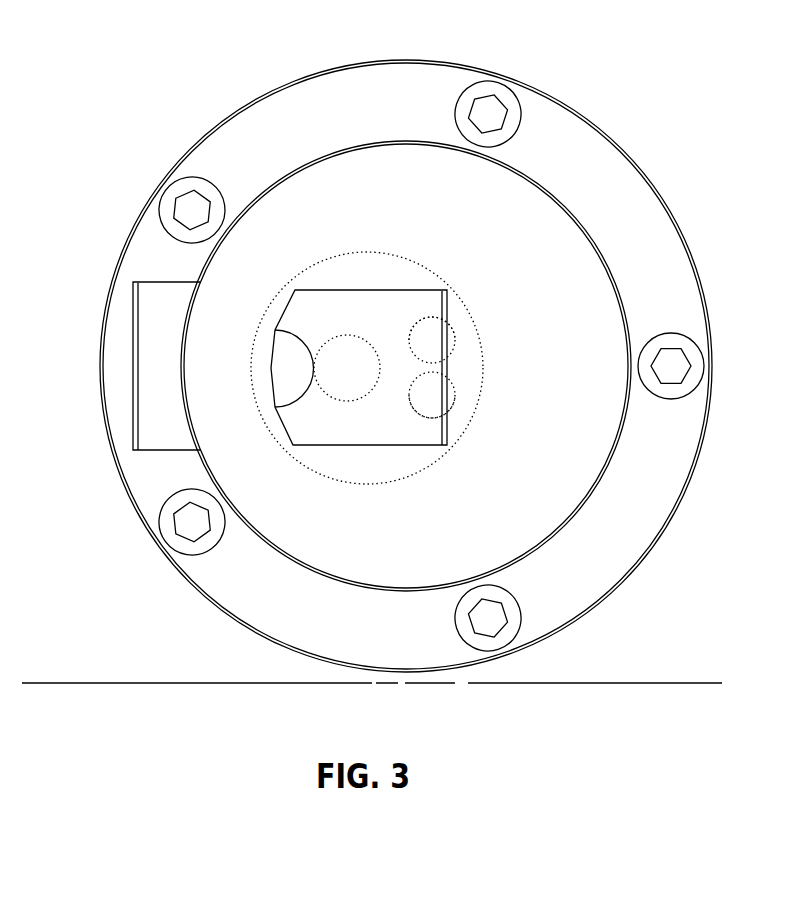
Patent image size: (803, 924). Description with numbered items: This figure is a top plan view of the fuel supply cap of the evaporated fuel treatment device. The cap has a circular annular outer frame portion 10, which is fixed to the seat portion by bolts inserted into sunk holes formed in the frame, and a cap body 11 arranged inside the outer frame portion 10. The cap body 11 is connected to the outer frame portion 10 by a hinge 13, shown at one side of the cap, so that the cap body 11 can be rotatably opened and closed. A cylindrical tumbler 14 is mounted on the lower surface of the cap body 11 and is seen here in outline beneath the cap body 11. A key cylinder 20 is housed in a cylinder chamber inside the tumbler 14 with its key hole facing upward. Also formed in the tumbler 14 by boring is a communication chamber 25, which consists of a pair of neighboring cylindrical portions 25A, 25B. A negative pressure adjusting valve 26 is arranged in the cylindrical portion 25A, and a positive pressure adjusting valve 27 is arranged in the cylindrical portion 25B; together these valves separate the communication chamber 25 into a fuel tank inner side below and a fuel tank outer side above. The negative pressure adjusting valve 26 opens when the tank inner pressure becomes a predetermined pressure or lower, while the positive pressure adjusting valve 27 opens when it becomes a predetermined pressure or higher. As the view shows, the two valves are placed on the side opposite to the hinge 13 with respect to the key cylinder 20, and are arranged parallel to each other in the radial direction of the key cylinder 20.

The outer frame portion 10 is at (277, 111).
The cap body 11 is at (533, 268).
The hinge 13 is at (158, 382).
The tumbler 14 is at (377, 252).
The key cylinder 20 is at (347, 335).
The communication chamber 25 is at (512, 367).
The cylindrical portion 25A is at (491, 395).
The cylindrical portion 25B is at (452, 335).
The negative pressure adjusting valve 26 is at (426, 418).
The positive pressure adjusting valve 27 is at (425, 317).